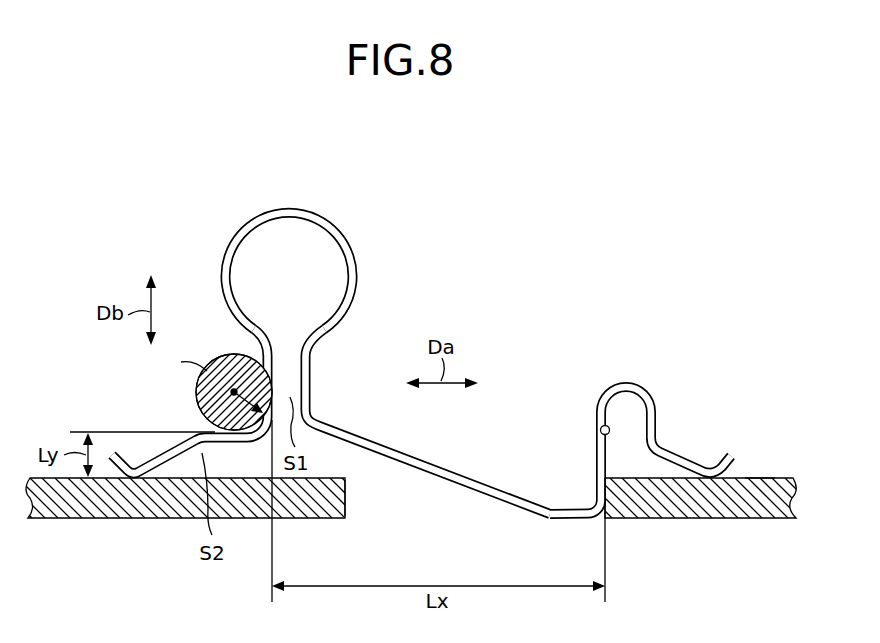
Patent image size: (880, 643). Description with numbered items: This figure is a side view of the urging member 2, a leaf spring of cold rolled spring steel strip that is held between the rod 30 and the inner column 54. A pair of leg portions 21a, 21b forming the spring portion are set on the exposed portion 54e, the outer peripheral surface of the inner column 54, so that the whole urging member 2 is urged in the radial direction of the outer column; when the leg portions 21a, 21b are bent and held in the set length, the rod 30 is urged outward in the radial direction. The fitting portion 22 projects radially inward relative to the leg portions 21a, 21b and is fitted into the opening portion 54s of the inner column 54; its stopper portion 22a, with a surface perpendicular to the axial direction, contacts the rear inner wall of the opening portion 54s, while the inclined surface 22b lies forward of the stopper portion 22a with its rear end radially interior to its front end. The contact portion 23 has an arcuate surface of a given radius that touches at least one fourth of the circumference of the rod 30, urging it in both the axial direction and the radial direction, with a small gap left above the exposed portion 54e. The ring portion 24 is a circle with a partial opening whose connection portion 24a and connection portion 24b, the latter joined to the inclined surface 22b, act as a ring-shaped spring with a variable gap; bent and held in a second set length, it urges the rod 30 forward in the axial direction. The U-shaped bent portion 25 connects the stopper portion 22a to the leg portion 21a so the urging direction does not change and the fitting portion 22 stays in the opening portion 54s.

The urging member 2 is at (423, 354).
The leg portion 21a is at (709, 478).
The leg portion 21b is at (133, 478).
The fitting portion 22 is at (575, 519).
The stopper portion 22a is at (600, 430).
The inclined surface 22b is at (478, 488).
The contact portion 23 is at (243, 428).
The ring portion 24 is at (292, 212).
The connection portion 24a is at (262, 358).
The connection portion 24b is at (311, 370).
The bent portion 25 is at (626, 383).
The rod 30 is at (203, 397).
The inner column 54 is at (778, 505).
The exposed portion 54e is at (762, 474).
The opening portion 54s is at (347, 520).